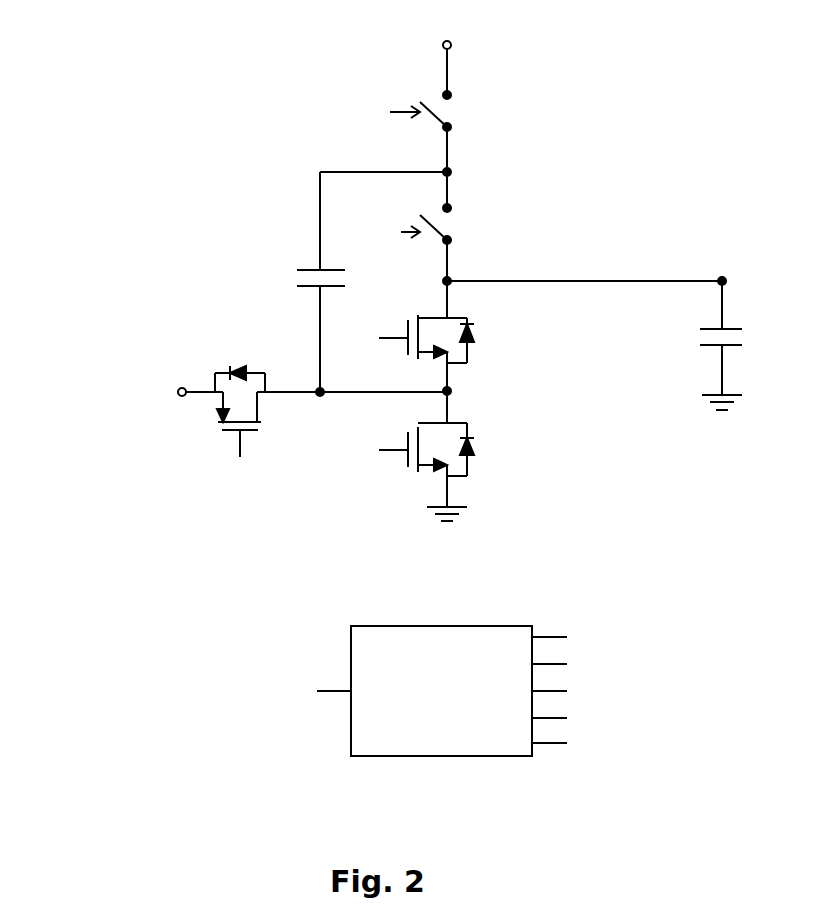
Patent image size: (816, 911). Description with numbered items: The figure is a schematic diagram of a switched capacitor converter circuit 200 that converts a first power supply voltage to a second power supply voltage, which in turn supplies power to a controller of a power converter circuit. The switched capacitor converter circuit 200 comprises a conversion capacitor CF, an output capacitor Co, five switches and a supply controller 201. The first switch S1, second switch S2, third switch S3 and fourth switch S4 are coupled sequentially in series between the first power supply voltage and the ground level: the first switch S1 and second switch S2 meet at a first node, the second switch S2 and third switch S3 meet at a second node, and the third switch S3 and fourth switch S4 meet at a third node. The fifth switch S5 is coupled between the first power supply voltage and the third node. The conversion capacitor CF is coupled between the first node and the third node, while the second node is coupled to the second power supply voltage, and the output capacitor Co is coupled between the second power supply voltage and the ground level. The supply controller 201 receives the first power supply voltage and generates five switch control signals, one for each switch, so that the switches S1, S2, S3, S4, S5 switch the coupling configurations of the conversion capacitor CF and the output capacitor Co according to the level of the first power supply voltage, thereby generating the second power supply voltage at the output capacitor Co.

The switched capacitor converter circuit 200 is at (102, 102).
The supply controller 201 is at (462, 734).
The first switch S1 is at (455, 116).
The second switch S2 is at (455, 229).
The third switch S3 is at (455, 339).
The fourth switch S4 is at (455, 449).
The fifth switch S5 is at (250, 411).
The conversion capacitor CF is at (334, 280).
The output capacitor Co is at (737, 337).